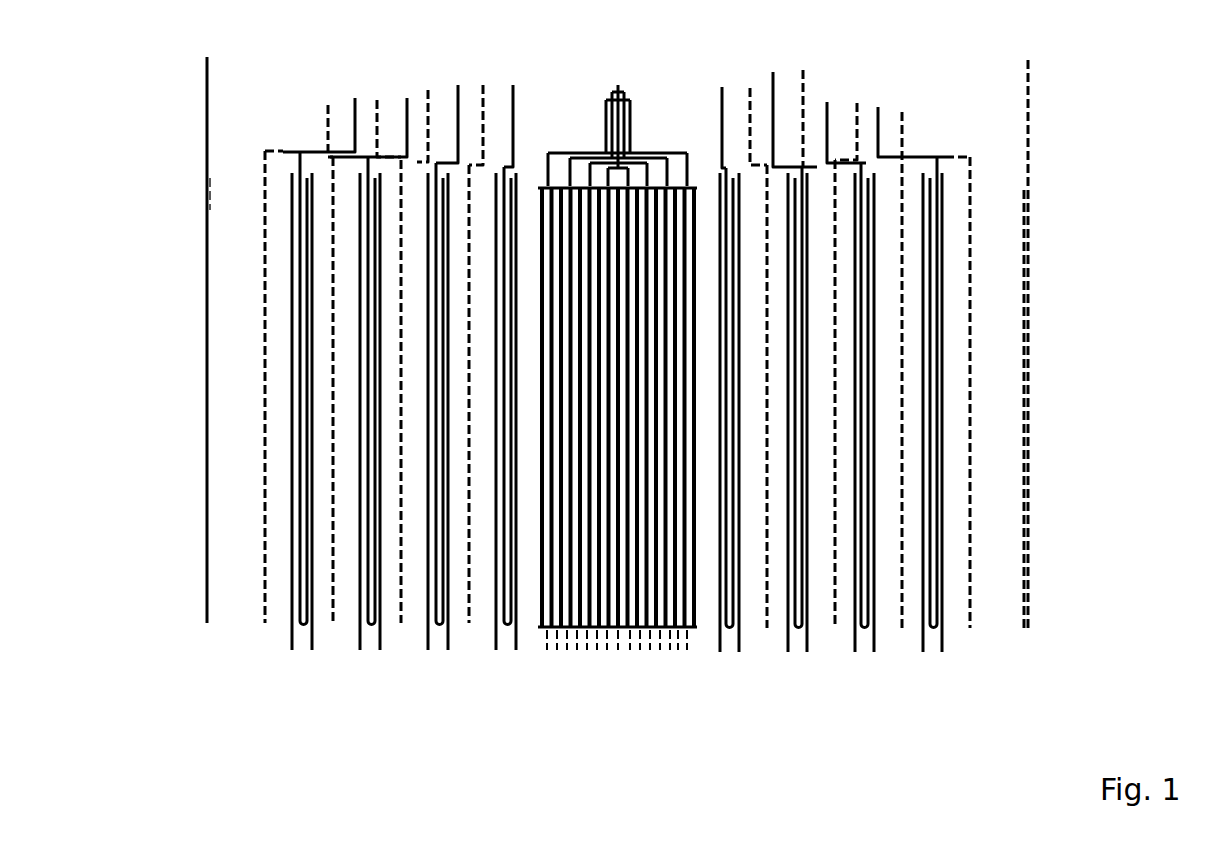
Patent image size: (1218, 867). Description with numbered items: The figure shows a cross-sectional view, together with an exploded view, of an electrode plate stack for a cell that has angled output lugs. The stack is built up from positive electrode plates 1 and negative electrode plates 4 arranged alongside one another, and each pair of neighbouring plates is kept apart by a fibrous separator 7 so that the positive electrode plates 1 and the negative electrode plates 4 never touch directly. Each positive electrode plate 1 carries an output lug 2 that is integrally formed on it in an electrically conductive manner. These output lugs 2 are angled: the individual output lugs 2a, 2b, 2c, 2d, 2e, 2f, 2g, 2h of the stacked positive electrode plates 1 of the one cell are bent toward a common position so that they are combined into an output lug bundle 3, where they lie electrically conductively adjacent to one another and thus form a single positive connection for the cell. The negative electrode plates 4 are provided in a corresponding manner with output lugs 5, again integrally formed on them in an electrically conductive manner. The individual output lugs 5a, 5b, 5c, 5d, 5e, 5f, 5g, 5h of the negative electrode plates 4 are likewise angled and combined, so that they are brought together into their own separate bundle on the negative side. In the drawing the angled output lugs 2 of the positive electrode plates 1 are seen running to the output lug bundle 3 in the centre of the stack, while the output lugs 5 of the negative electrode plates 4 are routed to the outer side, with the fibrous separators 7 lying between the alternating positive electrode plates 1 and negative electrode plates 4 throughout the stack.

The positive electrode plate 1 is at (260, 380).
The output lug 2 is at (209, 98).
The output lug 2a is at (354, 98).
The output lug 2b is at (407, 98).
The output lug 2c is at (458, 85).
The output lug 2d is at (513, 85).
The output lug 2e is at (879, 107).
The output lug 2f is at (828, 102).
The output lug 2g is at (774, 72).
The output lug 2h is at (722, 87).
The output lug bundle 3 is at (623, 92).
The negative electrode plate 4 is at (263, 623).
The output lug 5 is at (1027, 108).
The output lug 5a is at (328, 105).
The output lug 5b is at (377, 100).
The output lug 5c is at (428, 90).
The output lug 5d is at (483, 85).
The output lug 5e is at (903, 112).
The output lug 5f is at (857, 103).
The output lug 5g is at (804, 70).
The output lug 5h is at (750, 88).
The fibrous separator 7 is at (687, 637).